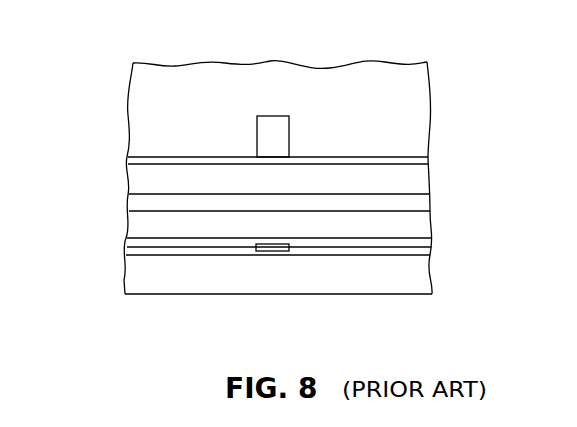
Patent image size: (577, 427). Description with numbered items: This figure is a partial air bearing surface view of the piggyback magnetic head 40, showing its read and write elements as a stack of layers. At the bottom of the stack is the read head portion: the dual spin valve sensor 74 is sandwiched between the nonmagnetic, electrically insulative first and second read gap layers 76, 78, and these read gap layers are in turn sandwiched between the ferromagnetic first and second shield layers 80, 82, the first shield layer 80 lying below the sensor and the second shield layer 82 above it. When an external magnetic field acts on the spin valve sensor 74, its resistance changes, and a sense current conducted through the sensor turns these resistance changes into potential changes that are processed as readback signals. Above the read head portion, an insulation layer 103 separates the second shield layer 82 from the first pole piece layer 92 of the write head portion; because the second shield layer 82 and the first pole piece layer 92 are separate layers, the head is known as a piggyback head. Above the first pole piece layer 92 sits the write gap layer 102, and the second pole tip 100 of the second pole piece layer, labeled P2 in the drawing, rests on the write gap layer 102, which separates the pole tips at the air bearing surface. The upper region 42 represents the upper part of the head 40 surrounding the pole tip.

The piggyback magnetic head 40 is at (447, 77).
The upper layer 42 is at (137, 90).
The write gap layer 102 is at (195, 160).
The first pole piece layer 92 is at (138, 178).
The insulation layer 103 is at (420, 203).
The second shield layer 82 is at (130, 228).
The second read gap layer 78 is at (393, 243).
The first read gap layer 76 is at (185, 255).
The first shield layer 80 is at (420, 277).
The dual spin valve sensor 74 is at (272, 251).
The second pole tip 100 is at (272, 125).
The P2 layer label P2 is at (277, 142).